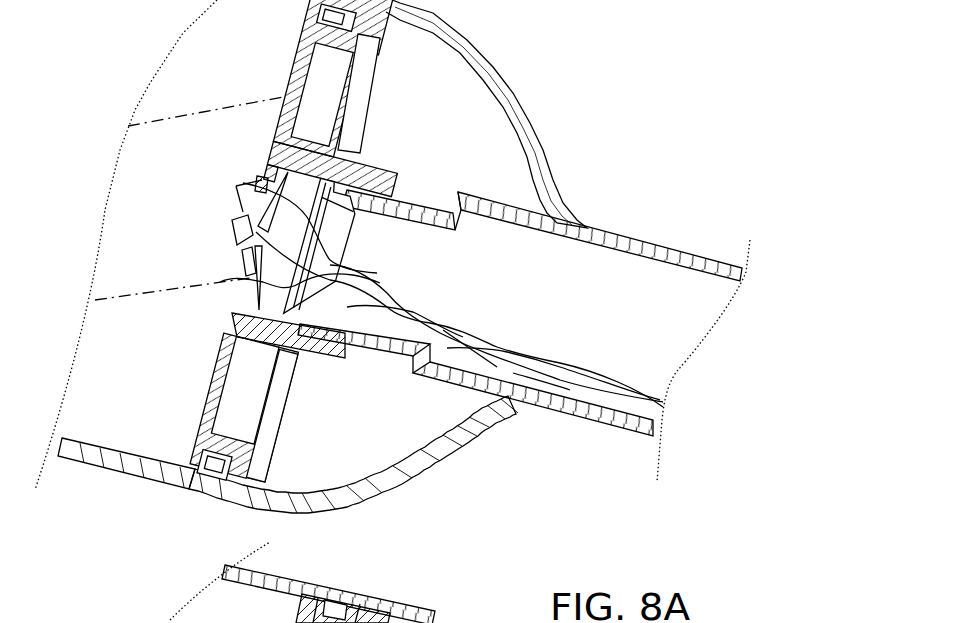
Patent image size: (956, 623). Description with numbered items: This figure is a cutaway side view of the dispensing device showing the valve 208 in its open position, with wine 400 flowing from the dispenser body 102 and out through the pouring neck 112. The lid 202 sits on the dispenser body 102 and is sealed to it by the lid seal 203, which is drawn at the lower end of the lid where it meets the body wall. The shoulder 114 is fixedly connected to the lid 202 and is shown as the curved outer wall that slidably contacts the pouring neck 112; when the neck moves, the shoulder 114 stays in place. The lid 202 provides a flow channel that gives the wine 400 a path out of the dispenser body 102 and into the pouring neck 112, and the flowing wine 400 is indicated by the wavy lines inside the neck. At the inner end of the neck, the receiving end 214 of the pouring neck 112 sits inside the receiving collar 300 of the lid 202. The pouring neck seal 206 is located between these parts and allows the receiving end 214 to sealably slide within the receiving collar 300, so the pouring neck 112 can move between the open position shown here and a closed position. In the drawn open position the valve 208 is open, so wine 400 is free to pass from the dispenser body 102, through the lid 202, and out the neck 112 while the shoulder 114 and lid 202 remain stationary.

The dispenser body 102 is at (77, 458).
The pouring neck 112 is at (660, 242).
The shoulder 114 is at (508, 78).
The lid 202 is at (198, 393).
The lid seal 203 is at (201, 487).
The pouring neck seal 206 is at (362, 230).
The valve 208 is at (222, 223).
The receiving end 214 is at (413, 200).
The receiving collar 300 is at (327, 360).
The wine 400 is at (556, 362).